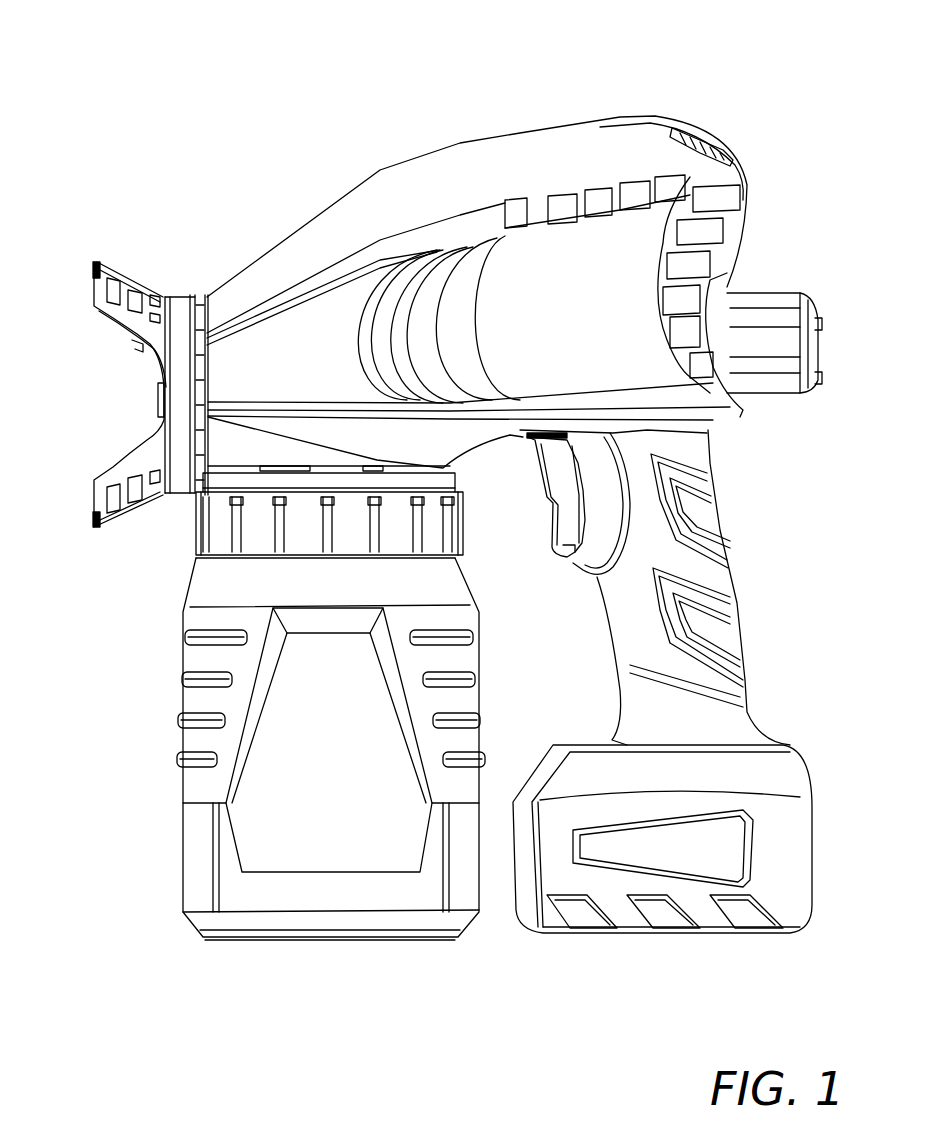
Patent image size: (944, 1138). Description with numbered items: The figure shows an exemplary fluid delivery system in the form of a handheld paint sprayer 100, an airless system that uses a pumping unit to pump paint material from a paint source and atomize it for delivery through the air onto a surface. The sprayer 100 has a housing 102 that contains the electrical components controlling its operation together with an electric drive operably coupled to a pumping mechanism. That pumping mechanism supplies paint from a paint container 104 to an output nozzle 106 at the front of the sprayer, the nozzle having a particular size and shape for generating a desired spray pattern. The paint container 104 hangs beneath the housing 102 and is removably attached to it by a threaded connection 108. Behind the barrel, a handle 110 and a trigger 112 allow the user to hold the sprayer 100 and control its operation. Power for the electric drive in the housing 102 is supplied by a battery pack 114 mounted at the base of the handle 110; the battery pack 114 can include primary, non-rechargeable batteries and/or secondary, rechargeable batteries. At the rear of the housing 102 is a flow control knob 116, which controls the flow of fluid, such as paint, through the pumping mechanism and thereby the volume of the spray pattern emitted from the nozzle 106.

The handheld paint sprayer 100 is at (678, 65).
The housing 102 is at (409, 183).
The paint container 104 is at (190, 855).
The output nozzle 106 is at (157, 408).
The threaded connection 108 is at (263, 509).
The handle 110 is at (643, 633).
The trigger 112 is at (548, 504).
The battery pack 114 is at (765, 782).
The flow control knob 116 is at (790, 310).